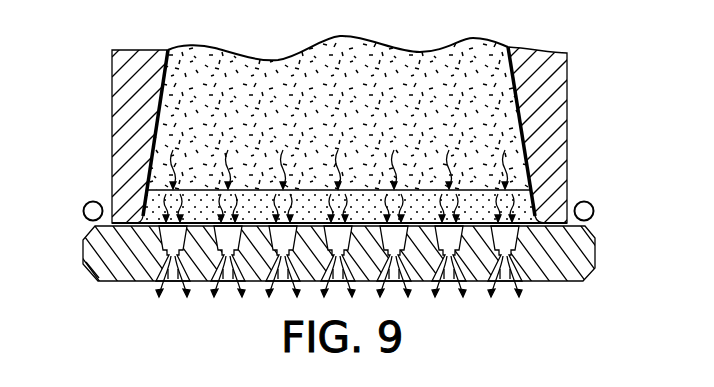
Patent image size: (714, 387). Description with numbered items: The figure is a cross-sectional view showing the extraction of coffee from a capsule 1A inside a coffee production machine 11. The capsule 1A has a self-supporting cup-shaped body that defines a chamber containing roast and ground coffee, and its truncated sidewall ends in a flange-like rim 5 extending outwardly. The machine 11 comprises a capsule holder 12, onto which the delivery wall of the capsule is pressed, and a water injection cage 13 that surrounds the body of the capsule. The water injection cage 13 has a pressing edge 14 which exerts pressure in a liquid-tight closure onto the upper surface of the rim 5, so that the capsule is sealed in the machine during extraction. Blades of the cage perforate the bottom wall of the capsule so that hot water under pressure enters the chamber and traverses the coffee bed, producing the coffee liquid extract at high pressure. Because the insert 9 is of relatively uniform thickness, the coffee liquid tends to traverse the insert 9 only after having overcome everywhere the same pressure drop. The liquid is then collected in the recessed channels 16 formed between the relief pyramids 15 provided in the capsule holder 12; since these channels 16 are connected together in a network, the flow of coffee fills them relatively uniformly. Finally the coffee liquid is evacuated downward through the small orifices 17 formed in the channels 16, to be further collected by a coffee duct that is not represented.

The coffee production machine 11 is at (355, 193).
The water injection cage 13 is at (112, 67).
The capsule 1A is at (528, 108).
The insert 9 is at (533, 190).
The pressing edge 14 is at (547, 219).
The rim 5 is at (603, 211).
The capsule holder 12 is at (330, 272).
The channels 16 is at (160, 272).
The pyramids 15 is at (209, 282).
The orifices 17 is at (466, 294).